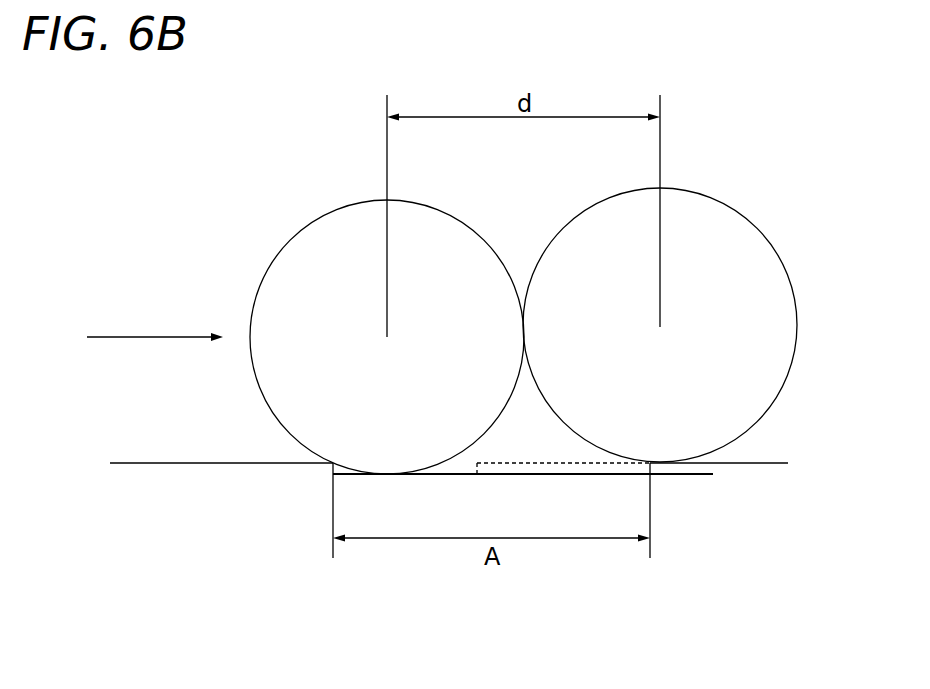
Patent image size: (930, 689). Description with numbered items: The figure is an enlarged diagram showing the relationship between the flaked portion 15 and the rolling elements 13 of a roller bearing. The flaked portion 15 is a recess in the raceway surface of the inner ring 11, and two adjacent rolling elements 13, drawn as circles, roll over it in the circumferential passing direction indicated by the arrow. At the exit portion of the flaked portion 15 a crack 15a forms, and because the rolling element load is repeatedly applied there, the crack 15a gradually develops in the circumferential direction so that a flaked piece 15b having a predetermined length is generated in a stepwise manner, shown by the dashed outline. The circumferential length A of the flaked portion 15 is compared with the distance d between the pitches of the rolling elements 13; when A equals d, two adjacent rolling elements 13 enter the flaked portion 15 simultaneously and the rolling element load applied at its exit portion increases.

The inner ring 11 is at (820, 553).
The rolling element 13 is at (742, 262).
The flaked portion 15 is at (388, 473).
The crack 15a is at (684, 476).
The flaked piece 15b is at (608, 464).